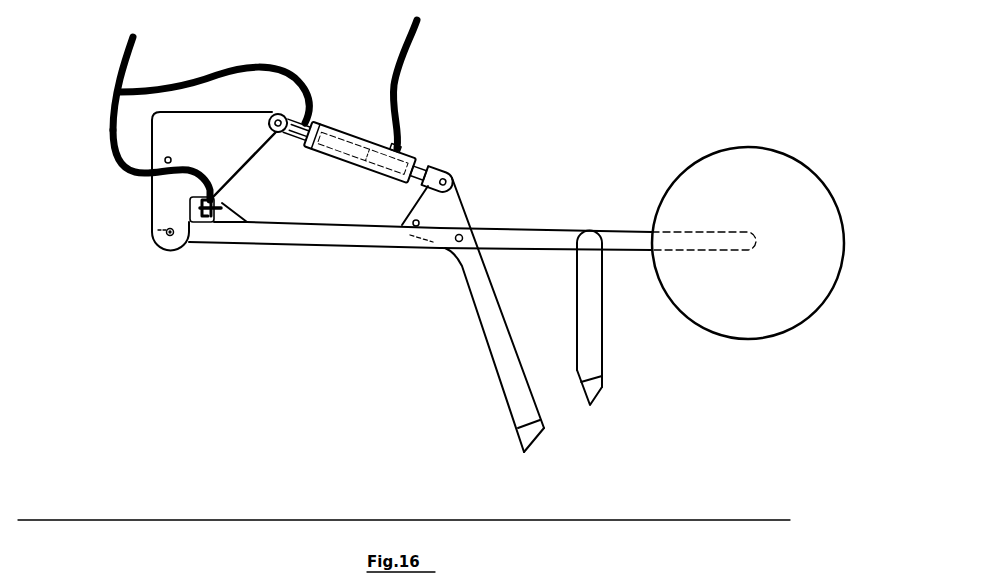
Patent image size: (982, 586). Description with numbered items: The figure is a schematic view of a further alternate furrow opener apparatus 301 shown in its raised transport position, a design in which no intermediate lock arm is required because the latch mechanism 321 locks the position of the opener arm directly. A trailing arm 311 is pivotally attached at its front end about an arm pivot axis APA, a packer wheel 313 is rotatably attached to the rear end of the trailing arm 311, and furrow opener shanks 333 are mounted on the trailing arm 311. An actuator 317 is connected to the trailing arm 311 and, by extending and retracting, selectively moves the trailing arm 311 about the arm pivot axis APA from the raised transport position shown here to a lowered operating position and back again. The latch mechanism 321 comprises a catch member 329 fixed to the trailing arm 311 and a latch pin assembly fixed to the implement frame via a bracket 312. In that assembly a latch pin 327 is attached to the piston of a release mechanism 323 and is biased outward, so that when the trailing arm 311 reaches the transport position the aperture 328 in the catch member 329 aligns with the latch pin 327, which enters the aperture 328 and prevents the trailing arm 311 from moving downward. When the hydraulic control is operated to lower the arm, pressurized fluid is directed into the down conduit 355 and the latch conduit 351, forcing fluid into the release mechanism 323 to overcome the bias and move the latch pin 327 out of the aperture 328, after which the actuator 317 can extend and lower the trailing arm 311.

The furrow opener apparatus 301 is at (535, 85).
The trailing arm 311 is at (397, 250).
The bracket 312 is at (240, 128).
The packer wheel 313 is at (748, 147).
The actuator 317 is at (400, 147).
The latch mechanism 321 is at (192, 215).
The release mechanism 323 is at (152, 216).
The latch pin 327 is at (213, 200).
The aperture 328 is at (222, 220).
The catch member 329 is at (232, 205).
The furrow opener shanks 333 is at (500, 386).
The latch conduit 351 is at (110, 130).
The down conduit 355 is at (122, 42).
The arm pivot axis APA is at (170, 232).